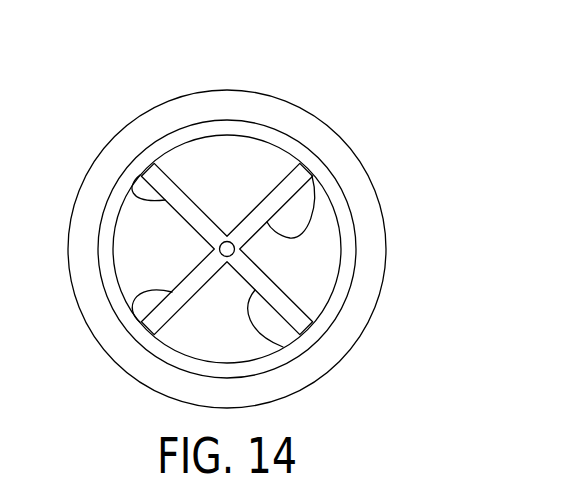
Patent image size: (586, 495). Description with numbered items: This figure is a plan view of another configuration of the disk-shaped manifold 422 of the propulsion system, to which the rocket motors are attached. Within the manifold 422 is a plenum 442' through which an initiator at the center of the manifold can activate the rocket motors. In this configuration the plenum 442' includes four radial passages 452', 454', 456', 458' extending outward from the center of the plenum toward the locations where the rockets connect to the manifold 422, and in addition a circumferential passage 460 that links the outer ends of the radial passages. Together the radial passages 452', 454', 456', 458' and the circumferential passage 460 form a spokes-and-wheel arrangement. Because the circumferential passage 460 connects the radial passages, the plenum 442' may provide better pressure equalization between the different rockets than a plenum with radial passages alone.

The manifold 422 is at (293, 122).
The plenum 442' is at (227, 206).
The radial passage 452' is at (360, 207).
The radial passage 454' is at (300, 363).
The radial passage 456' is at (111, 340).
The radial passage 458' is at (109, 146).
The circumferential passage 460 is at (357, 260).